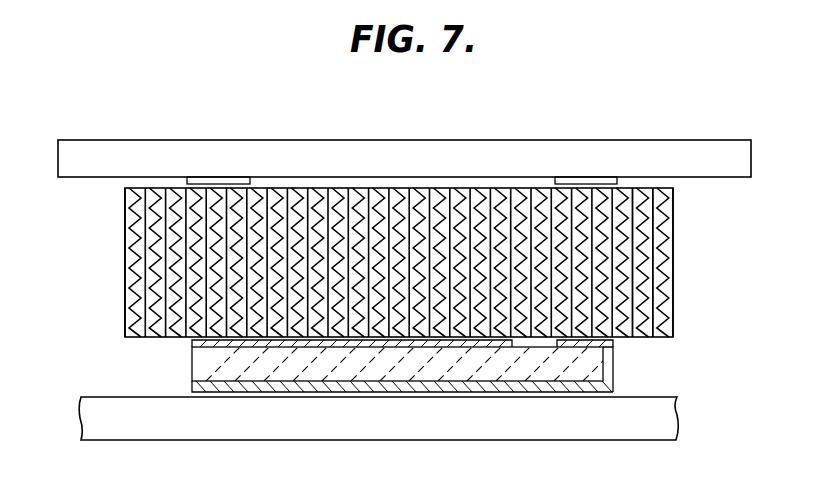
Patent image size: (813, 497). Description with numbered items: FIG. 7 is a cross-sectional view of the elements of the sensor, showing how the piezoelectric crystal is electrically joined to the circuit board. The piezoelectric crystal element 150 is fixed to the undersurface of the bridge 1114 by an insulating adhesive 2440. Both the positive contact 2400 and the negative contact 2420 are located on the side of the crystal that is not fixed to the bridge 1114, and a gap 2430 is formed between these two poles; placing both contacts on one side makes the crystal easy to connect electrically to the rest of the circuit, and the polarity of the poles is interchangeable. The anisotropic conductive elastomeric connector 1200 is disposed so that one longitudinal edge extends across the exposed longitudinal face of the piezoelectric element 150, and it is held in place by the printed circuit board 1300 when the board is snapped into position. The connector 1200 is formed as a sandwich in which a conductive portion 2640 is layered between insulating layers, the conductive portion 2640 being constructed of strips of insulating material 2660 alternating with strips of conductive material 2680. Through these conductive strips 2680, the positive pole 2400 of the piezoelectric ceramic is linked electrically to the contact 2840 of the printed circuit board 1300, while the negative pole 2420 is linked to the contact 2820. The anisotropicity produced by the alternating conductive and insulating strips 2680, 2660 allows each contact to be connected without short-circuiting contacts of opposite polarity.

The printed circuit board 1300 is at (490, 152).
The contact 2840 is at (225, 179).
The contact 2820 is at (602, 179).
The anisotropic conductive elastomeric connector 1200 is at (708, 270).
The strips of insulating material 2660 is at (667, 214).
The strips of conductive material 2680 is at (660, 243).
The conductive portion 2640 is at (675, 306).
The positive contact 2400 is at (195, 343).
The negative contact 2420 is at (613, 343).
The piezoelectric crystal element 150 is at (197, 370).
The gap 2430 is at (537, 349).
The insulating adhesive 2440 is at (617, 393).
The bridge 1114 is at (616, 427).